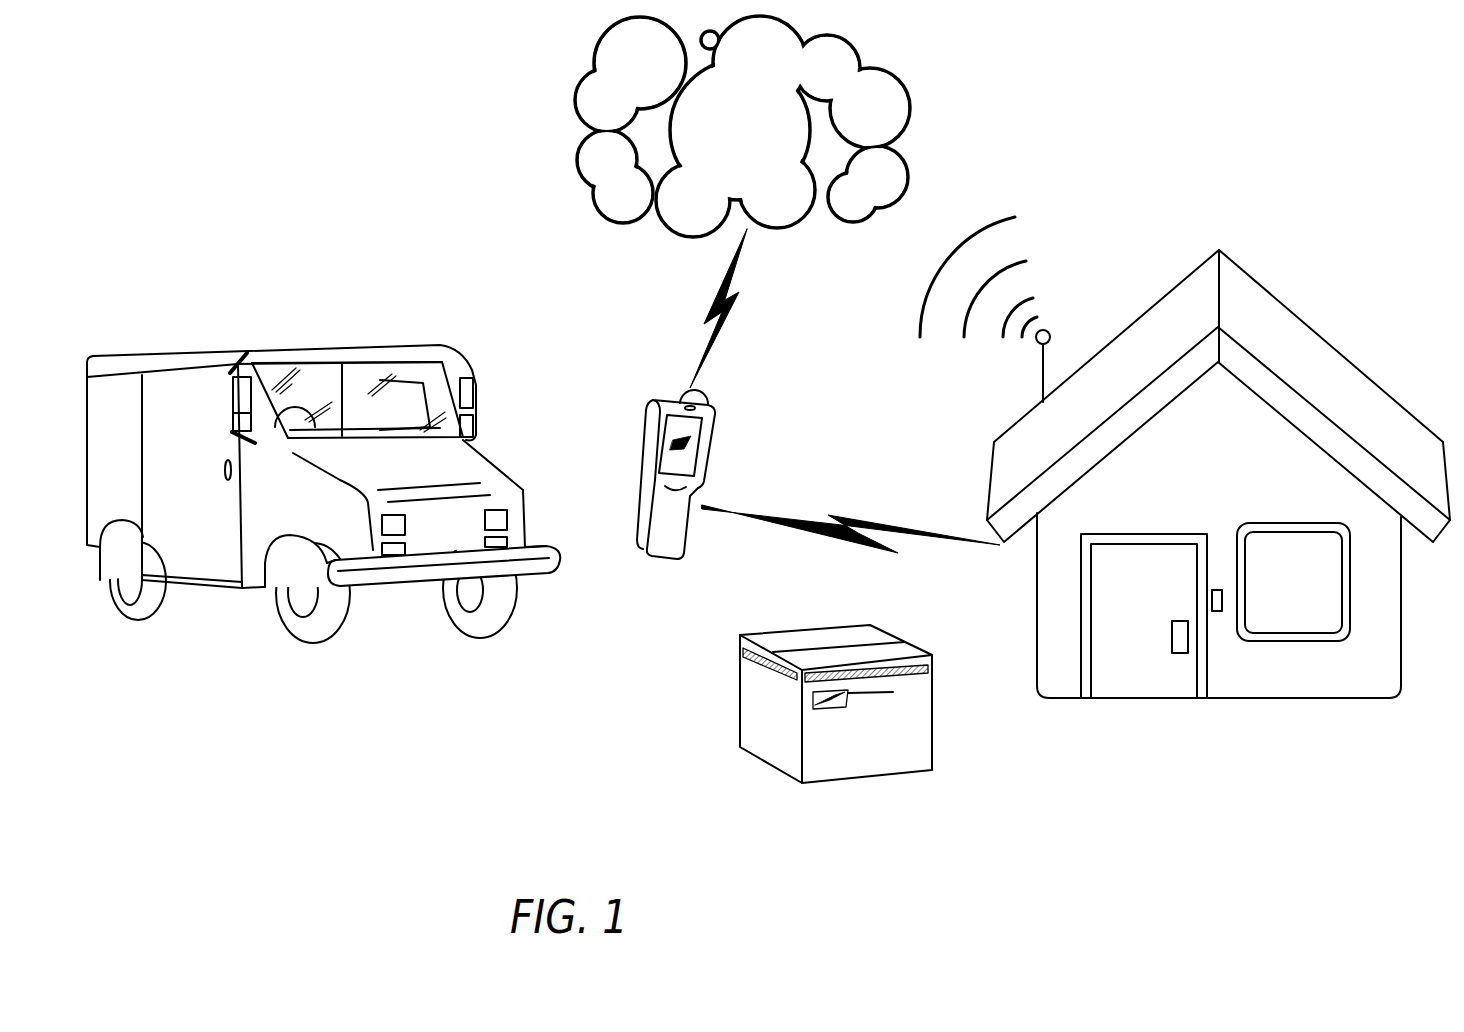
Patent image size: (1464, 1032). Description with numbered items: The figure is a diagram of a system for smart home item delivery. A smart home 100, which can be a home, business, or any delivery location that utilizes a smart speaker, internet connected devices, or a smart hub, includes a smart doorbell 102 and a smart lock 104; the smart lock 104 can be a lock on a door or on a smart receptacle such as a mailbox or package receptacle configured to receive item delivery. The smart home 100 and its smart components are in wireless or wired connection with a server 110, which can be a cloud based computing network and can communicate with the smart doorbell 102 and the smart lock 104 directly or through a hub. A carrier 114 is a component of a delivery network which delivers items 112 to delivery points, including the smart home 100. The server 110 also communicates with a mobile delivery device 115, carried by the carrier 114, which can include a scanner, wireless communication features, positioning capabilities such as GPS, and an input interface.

The smart home 100 is at (1399, 687).
The smart doorbell 102 is at (1215, 590).
The smart lock 104 is at (1172, 639).
The server 110 is at (758, 137).
The items 112 is at (875, 775).
The carrier 114 is at (198, 347).
The mobile delivery device 115 is at (705, 423).